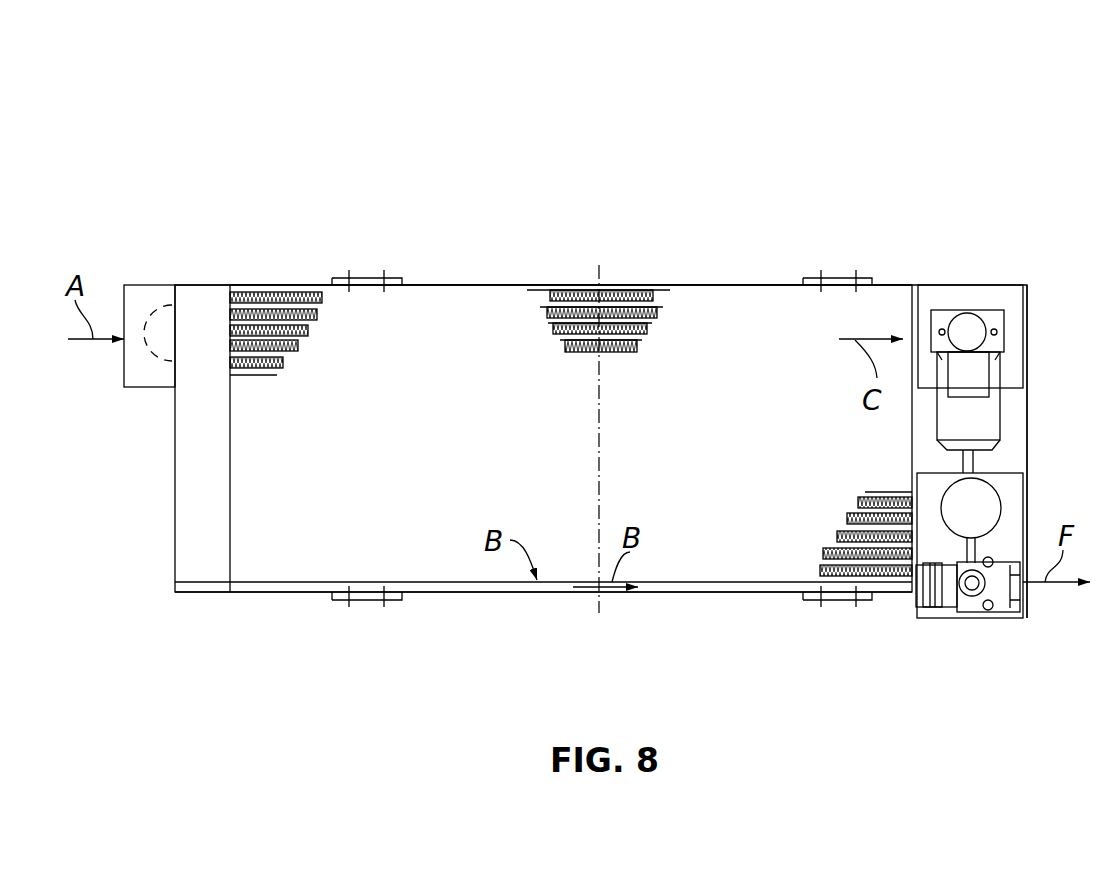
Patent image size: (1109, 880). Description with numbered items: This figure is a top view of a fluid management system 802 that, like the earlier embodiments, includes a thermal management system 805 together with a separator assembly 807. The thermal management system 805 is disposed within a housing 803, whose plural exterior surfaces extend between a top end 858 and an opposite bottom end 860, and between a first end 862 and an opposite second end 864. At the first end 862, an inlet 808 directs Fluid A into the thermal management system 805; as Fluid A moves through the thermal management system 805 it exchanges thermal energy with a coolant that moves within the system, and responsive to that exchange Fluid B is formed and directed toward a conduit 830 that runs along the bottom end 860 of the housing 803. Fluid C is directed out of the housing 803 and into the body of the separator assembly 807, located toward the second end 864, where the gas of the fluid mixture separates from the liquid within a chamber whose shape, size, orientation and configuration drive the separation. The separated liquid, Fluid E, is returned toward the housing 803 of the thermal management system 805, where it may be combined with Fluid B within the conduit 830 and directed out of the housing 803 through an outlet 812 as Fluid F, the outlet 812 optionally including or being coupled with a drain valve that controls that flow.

The fluid management system 802 is at (288, 140).
The inlet 808 is at (150, 280).
The first end 862 is at (175, 513).
The thermal management system 805 is at (430, 255).
The housing 803 is at (578, 285).
The top end 858 is at (684, 272).
The conduit 830 is at (787, 585).
The bottom end 860 is at (682, 620).
The second end 864 is at (1032, 372).
The separator assembly 807 is at (983, 298).
The outlet 812 is at (1010, 612).